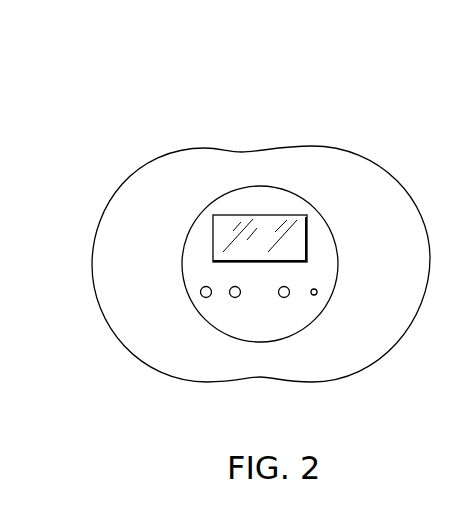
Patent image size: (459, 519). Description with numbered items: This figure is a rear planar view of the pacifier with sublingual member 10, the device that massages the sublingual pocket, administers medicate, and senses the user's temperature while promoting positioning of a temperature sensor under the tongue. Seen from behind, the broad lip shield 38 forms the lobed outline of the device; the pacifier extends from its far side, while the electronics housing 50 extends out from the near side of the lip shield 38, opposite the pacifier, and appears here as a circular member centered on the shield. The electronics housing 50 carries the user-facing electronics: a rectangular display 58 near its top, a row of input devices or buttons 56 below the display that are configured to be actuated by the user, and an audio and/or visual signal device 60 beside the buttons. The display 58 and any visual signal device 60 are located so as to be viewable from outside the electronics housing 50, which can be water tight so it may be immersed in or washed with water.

The pacifier with sublingual member 10 is at (197, 90).
The lip shield 38 is at (145, 167).
The electronics housing 50 is at (307, 201).
The input devices or buttons 56 is at (203, 290).
The display 58 is at (307, 238).
The audio and/or visual signal device 60 is at (316, 294).